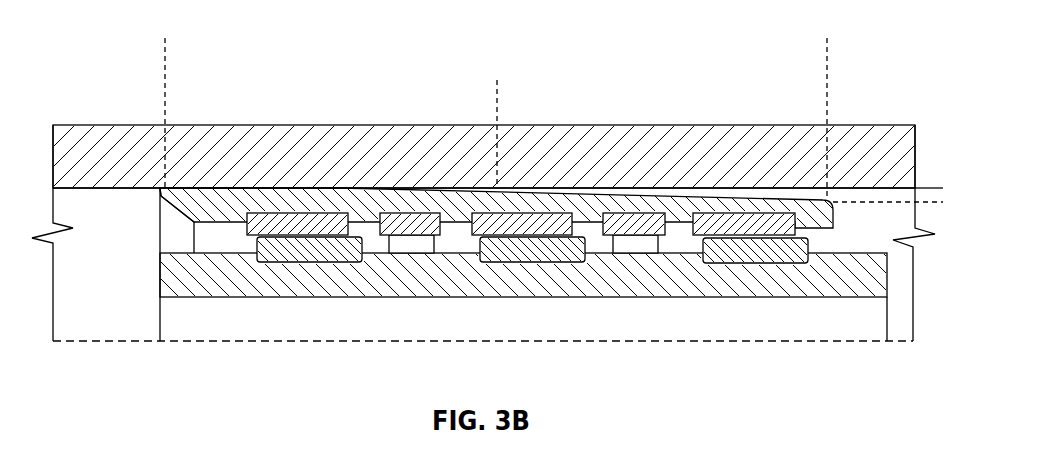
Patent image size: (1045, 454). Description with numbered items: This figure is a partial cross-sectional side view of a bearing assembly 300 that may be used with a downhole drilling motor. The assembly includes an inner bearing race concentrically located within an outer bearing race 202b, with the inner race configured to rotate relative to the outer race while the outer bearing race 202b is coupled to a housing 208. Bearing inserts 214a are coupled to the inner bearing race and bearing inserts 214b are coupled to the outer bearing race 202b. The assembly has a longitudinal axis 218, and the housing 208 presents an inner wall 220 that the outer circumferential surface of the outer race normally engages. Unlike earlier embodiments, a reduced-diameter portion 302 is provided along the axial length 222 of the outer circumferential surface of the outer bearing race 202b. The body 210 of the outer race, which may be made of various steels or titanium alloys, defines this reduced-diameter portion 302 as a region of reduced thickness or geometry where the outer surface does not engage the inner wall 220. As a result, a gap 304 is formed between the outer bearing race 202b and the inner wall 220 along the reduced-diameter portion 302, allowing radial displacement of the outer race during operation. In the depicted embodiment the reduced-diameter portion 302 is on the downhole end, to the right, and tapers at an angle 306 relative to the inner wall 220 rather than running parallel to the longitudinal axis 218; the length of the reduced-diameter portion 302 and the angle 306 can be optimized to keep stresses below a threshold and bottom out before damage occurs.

The bearing assembly 300 is at (124, 90).
The outer bearing race 202b is at (245, 187).
The housing 208 is at (838, 135).
The body 210 is at (163, 197).
The bearing inserts 214a is at (327, 253).
The bearing inserts 214b is at (490, 215).
The longitudinal axis 218 is at (310, 342).
The inner wall 220 is at (866, 193).
The axial length 222 is at (165, 45).
The reduced-diameter portion 302 is at (827, 88).
The gap 304 is at (817, 242).
The angle 306 is at (933, 226).